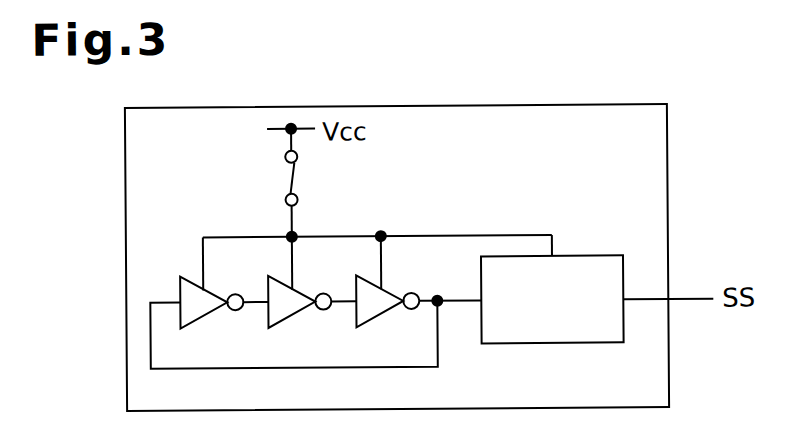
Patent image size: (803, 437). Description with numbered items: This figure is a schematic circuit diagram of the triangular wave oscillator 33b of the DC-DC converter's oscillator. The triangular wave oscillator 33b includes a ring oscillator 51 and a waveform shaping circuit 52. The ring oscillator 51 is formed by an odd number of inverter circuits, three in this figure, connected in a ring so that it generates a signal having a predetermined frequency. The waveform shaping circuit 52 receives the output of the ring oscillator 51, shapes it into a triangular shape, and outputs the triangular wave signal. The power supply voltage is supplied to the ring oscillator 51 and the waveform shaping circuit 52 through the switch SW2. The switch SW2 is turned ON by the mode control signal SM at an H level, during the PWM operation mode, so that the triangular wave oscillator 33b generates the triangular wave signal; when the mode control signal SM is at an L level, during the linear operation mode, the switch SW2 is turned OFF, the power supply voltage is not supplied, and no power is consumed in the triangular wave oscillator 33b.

The triangular wave oscillator 33b is at (668, 135).
The ring oscillator 51 is at (395, 223).
The waveform shaping circuit 52 is at (605, 257).
The switch SW2 is at (290, 181).
The mode control signal SM is at (297, 179).